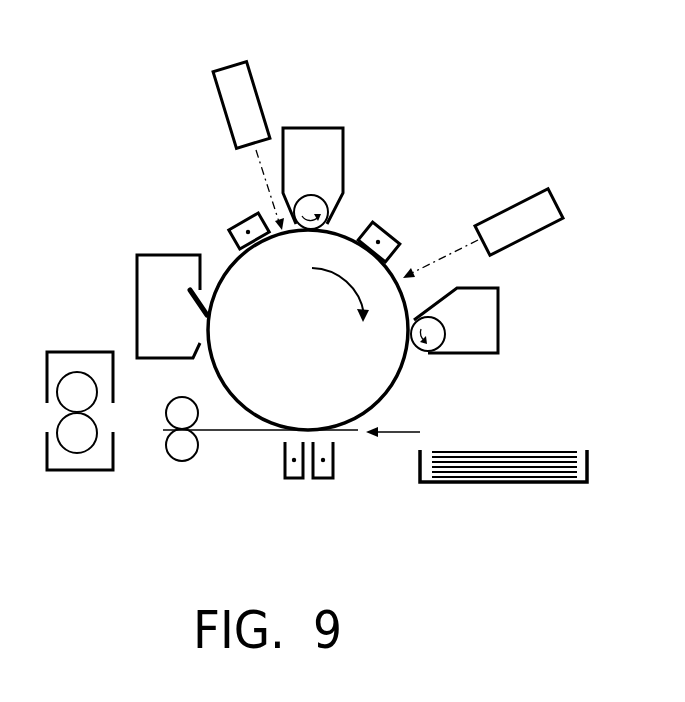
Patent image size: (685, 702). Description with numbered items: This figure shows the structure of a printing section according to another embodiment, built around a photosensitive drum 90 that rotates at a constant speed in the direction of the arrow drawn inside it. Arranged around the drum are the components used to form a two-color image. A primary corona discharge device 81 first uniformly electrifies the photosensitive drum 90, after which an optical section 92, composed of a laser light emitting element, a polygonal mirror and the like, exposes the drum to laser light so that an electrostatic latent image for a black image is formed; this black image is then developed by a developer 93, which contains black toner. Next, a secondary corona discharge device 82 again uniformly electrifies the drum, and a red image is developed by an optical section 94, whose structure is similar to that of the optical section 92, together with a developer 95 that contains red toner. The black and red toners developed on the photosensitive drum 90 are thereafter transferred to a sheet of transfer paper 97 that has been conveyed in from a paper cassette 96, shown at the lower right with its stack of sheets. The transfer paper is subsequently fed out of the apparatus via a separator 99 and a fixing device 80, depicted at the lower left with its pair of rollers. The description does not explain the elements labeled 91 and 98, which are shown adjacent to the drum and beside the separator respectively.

The fixing device 80 is at (75, 470).
The primary corona discharge device 81 is at (240, 222).
The secondary corona discharge device 82 is at (375, 222).
The photosensitive drum 90 is at (403, 368).
The cleaning unit 91 is at (137, 262).
The optical section 92 is at (253, 77).
The developer 93 is at (343, 140).
The optical section 94 is at (538, 188).
The developer 95 is at (500, 322).
The paper cassette 96 is at (590, 463).
The transfer paper 97 is at (252, 438).
The sensor 98 is at (335, 460).
The separator 99 is at (293, 482).